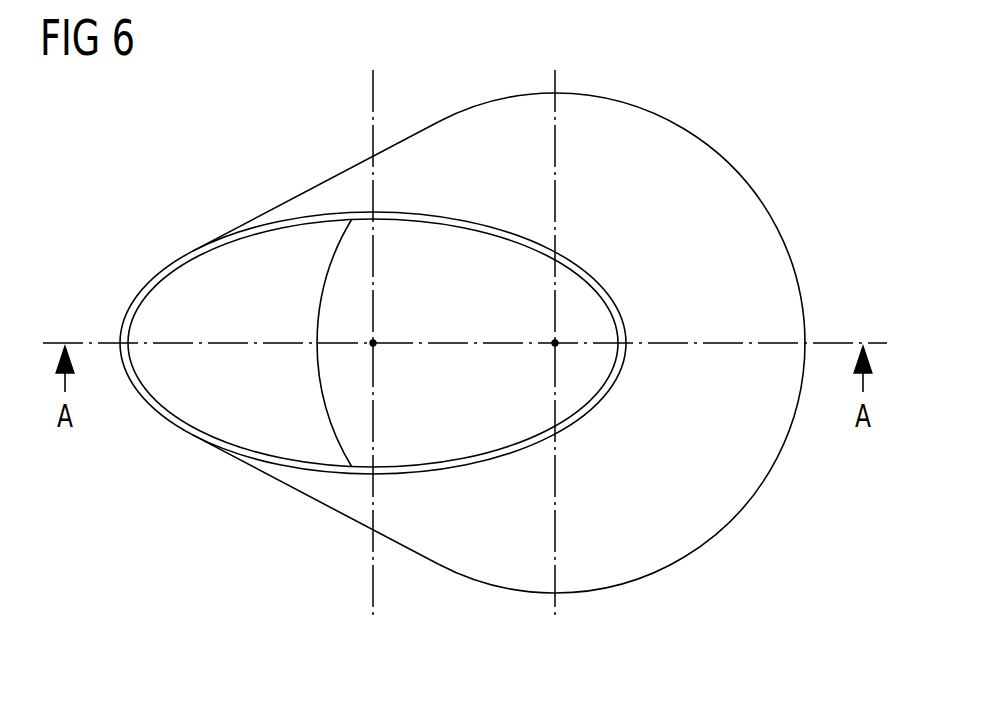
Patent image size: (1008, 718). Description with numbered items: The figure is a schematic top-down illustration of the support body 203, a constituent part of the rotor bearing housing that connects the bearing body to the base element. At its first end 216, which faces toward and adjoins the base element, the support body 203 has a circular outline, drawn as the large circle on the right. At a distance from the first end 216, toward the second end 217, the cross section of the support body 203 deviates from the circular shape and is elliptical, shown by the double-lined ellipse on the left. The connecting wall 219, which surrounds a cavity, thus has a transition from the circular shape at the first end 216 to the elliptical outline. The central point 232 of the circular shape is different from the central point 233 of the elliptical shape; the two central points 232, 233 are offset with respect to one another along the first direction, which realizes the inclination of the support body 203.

The support body 203 is at (757, 108).
The first end 216 is at (778, 228).
The second end 217 is at (166, 421).
The connecting wall 219 is at (756, 471).
The central point 232 is at (553, 348).
The central point 233 is at (377, 341).